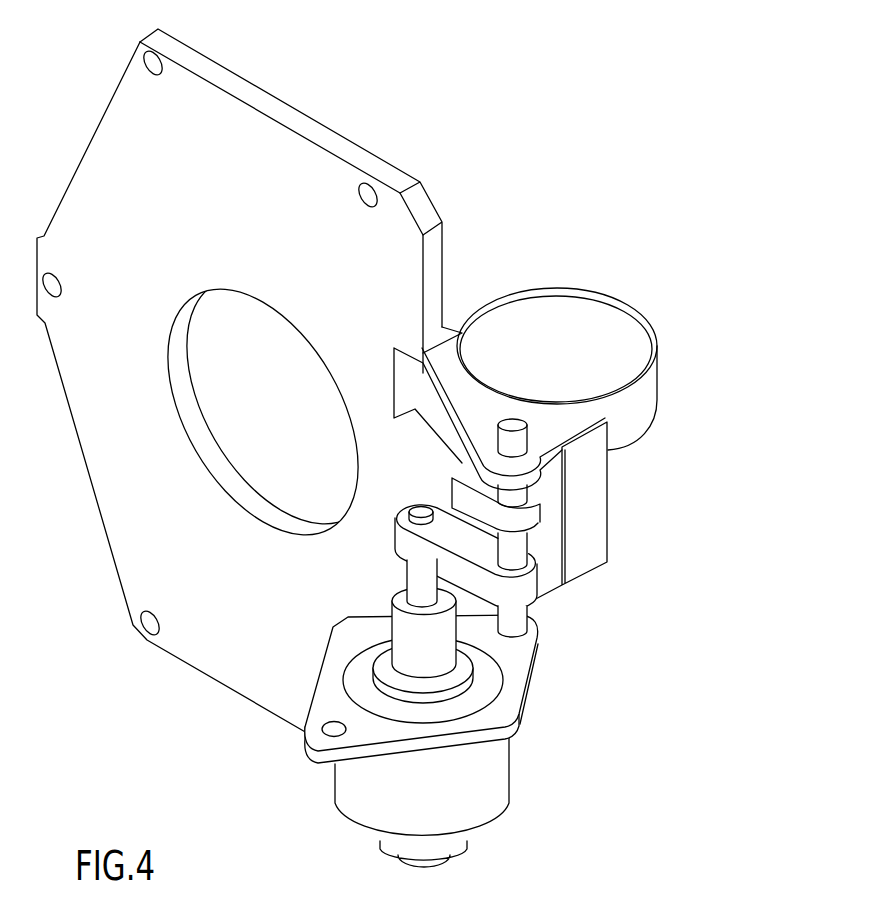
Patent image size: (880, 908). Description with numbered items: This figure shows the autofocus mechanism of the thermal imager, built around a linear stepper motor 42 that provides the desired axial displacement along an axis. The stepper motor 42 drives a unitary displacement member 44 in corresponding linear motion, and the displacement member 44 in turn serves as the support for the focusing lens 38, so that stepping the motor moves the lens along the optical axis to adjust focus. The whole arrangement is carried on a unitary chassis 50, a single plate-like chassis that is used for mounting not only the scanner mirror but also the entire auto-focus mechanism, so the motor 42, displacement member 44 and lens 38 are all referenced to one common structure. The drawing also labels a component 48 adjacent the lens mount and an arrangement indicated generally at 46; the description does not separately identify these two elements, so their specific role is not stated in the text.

The unitary chassis 50 is at (150, 155).
The cup support arm bracket 48 is at (460, 315).
The focusing lens 38 is at (572, 315).
The cup assembly 46 is at (578, 368).
The unitary displacement member 44 is at (597, 523).
The linear stepper motor 42 is at (490, 773).